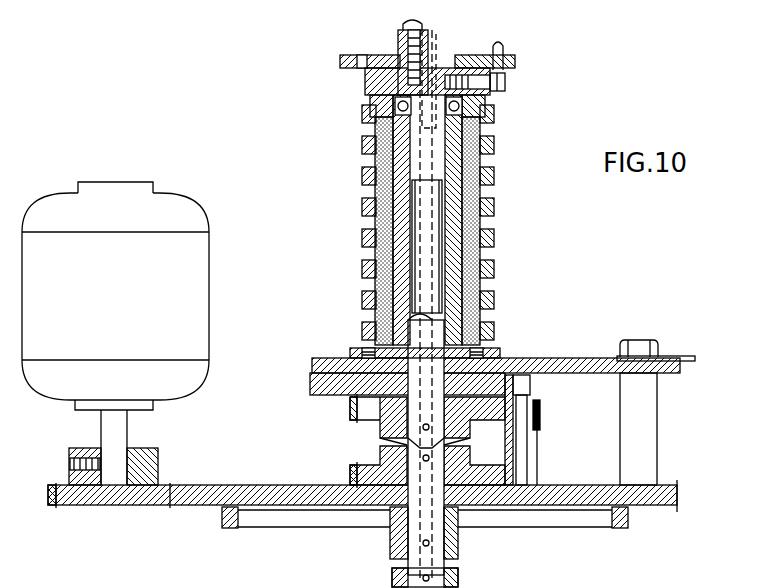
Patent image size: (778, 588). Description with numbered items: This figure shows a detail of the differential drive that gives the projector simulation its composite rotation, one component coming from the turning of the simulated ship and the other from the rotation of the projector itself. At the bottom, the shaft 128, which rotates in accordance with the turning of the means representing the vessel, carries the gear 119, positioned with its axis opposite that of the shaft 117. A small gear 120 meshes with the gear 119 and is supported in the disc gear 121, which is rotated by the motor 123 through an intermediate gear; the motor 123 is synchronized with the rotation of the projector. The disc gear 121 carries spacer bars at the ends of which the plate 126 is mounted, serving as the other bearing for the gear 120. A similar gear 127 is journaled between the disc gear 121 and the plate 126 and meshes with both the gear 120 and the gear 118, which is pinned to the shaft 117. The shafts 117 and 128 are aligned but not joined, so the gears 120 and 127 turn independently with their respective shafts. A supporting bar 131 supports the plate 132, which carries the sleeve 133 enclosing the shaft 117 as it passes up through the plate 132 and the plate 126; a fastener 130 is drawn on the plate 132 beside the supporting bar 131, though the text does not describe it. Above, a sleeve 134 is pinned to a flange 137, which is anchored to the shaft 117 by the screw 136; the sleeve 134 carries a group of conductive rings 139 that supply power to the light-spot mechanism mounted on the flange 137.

The shaft 117 is at (428, 198).
The gear 118 is at (350, 405).
The gear 119 is at (350, 474).
The small gear 120 is at (545, 452).
The disc gear 121 is at (560, 490).
The motor 123 is at (176, 200).
The plate 126 is at (508, 372).
The gear 127 is at (542, 412).
The shaft 128 is at (408, 535).
The bolt 130 is at (665, 360).
The supporting bar 131 is at (652, 406).
The plate 132 is at (538, 362).
The sleeve 133 is at (462, 232).
The sleeve 134 is at (466, 170).
The screw 136 is at (426, 30).
The flange 137 is at (340, 60).
The conductive rings 139 is at (362, 172).